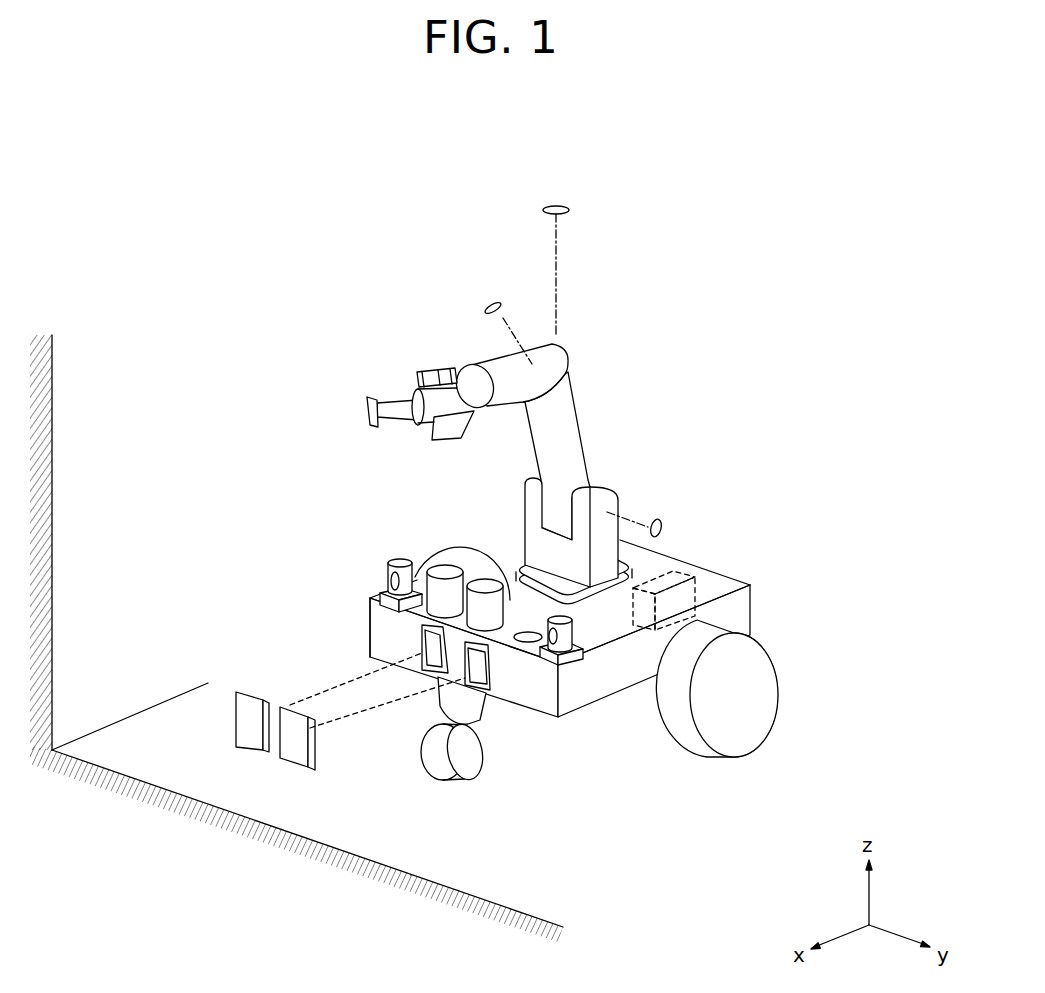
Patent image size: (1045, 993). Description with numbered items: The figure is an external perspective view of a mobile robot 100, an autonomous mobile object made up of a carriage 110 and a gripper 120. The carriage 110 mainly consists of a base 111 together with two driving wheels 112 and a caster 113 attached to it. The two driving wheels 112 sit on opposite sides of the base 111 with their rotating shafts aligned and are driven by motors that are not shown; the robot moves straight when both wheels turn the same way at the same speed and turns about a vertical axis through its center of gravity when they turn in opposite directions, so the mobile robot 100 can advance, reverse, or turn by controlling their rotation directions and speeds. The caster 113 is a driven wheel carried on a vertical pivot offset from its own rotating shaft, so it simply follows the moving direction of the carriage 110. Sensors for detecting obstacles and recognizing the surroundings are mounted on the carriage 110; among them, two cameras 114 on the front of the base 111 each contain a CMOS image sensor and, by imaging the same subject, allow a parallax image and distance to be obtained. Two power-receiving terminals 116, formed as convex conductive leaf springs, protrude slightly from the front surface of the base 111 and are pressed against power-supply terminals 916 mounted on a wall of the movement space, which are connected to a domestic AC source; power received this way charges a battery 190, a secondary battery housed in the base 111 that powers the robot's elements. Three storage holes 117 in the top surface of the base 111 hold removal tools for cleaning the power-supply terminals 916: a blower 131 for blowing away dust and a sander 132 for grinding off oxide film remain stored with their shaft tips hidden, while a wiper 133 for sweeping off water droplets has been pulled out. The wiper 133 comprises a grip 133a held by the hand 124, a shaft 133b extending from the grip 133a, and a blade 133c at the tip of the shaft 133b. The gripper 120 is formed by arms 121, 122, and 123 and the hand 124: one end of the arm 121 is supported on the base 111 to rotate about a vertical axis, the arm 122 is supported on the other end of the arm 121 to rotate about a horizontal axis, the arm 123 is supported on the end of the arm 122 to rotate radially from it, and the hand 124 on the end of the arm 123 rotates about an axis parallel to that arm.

The mobile robot 100 is at (582, 516).
The carriage 110 is at (597, 670).
The base 111 is at (370, 628).
The driving wheel 112 is at (440, 552).
The caster 113 is at (467, 758).
The camera 114 is at (395, 560).
The power-receiving terminal 116 is at (432, 647).
The storage hole 117 is at (533, 640).
The gripper 120 is at (582, 405).
The arm 121 is at (608, 502).
The arm 122 is at (563, 417).
The arm 123 is at (548, 357).
The hand 124 is at (418, 370).
The blower 131 is at (447, 565).
The sander 132 is at (486, 583).
The wiper 133 is at (369, 403).
The grip 133a is at (447, 398).
The shaft 133b is at (394, 414).
The blade 133c is at (371, 397).
The battery 190 is at (697, 587).
The power-supply terminal 916 is at (292, 757).